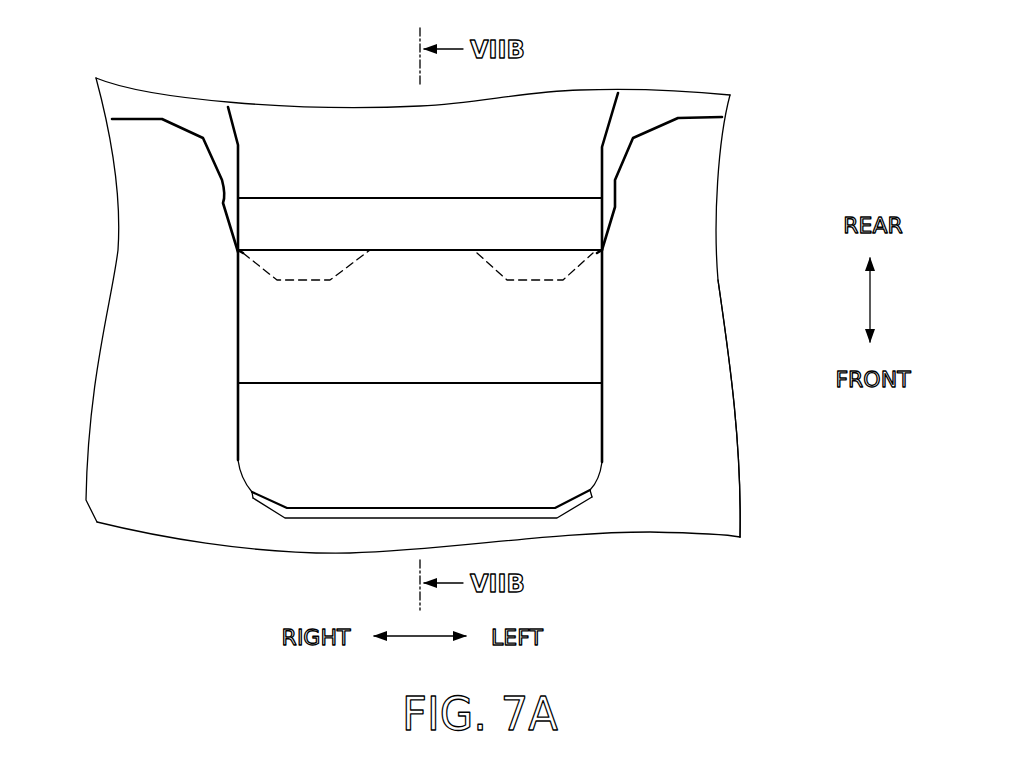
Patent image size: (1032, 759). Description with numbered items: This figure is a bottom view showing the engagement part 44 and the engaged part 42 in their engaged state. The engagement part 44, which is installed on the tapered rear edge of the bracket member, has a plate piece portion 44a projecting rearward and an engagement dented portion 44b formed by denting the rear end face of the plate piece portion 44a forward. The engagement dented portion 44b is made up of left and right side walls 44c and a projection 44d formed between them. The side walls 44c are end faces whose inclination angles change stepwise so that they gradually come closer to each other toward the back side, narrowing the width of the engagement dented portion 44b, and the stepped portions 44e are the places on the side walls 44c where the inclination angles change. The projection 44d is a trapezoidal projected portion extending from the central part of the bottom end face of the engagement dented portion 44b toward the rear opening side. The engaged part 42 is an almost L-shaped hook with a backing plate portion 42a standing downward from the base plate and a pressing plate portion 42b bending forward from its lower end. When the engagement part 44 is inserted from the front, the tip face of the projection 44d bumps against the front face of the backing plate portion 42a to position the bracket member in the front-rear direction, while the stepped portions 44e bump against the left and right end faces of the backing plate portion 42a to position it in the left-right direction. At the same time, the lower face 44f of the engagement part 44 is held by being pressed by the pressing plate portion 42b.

The engaged part 42 is at (608, 476).
The backing plate portion 42a is at (313, 198).
The pressing plate portion 42b is at (318, 352).
The engagement part 44 is at (702, 112).
The plate piece portion 44a is at (687, 180).
The engagement dented portion 44b is at (623, 160).
The side walls 44c is at (225, 197).
The projection 44d is at (385, 250).
The stepped portions 44e is at (238, 250).
The lower face 44f is at (716, 440).